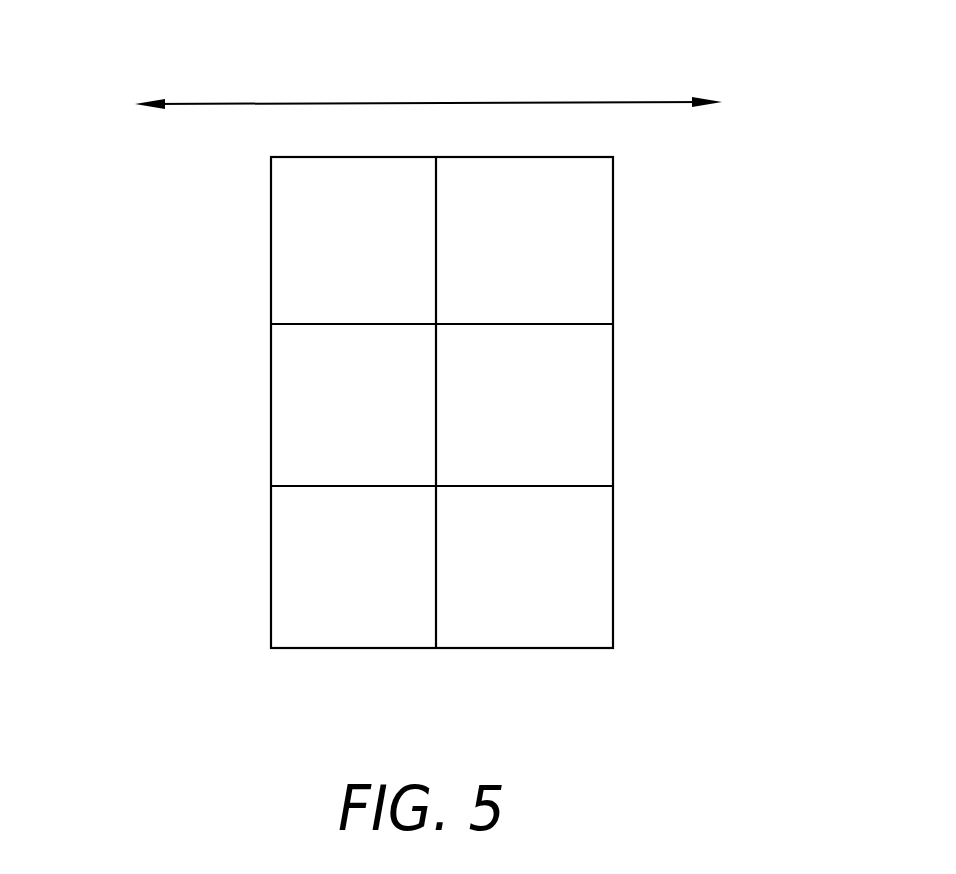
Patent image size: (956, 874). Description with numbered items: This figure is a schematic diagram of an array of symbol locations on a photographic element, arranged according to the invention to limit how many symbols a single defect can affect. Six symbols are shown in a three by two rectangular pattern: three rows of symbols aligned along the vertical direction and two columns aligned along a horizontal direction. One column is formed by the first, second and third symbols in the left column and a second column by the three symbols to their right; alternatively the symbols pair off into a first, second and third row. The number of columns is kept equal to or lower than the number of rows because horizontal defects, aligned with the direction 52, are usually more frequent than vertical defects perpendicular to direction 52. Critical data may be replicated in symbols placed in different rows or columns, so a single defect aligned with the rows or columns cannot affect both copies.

The direction 52 is at (476, 103).